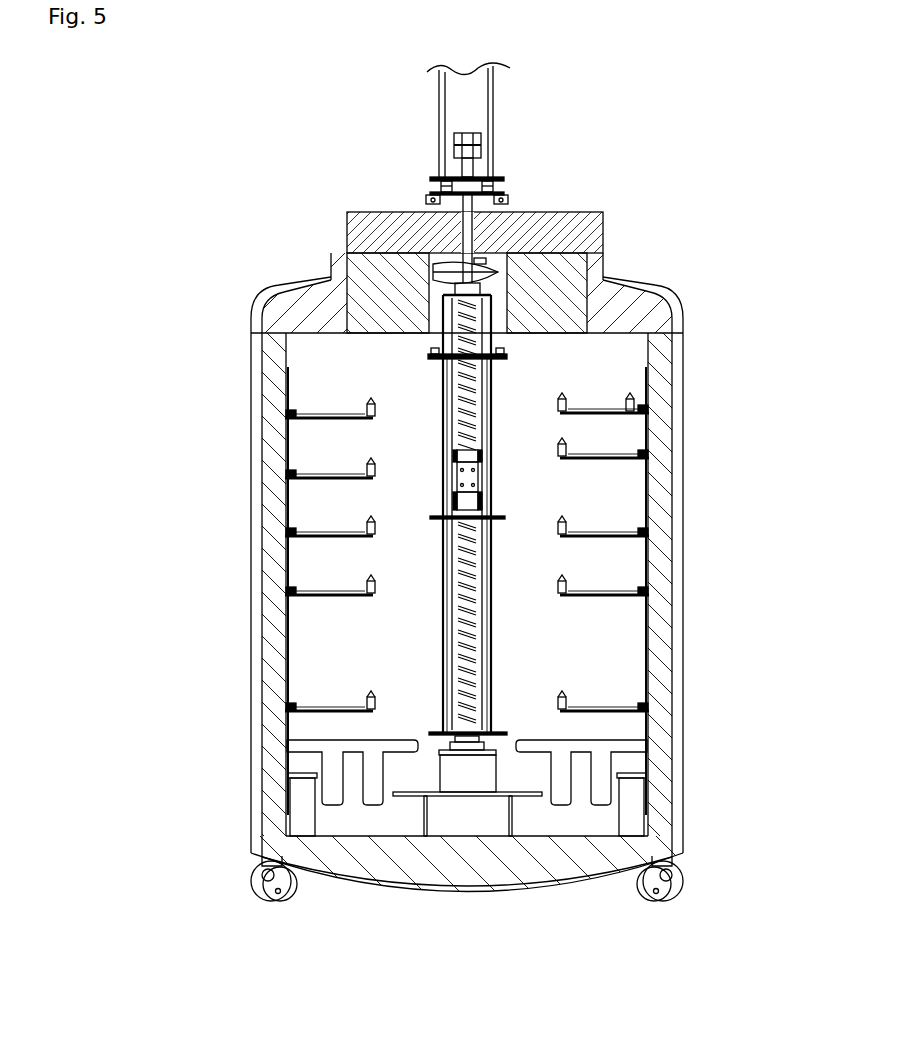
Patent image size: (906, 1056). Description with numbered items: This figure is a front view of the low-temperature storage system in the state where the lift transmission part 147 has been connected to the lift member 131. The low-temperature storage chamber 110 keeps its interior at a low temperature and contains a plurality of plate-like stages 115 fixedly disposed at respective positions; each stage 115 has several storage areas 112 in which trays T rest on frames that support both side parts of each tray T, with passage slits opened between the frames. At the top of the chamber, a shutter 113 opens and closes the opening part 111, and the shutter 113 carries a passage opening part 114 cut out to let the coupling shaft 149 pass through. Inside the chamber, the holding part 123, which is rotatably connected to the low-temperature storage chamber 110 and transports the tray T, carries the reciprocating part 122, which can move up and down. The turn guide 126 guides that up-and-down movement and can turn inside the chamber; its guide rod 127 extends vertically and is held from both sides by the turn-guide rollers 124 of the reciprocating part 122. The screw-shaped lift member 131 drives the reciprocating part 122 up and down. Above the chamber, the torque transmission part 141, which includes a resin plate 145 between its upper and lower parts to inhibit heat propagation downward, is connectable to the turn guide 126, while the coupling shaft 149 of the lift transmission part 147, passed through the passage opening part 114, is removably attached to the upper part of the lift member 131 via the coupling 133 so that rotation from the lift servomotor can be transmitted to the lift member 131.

The low-temperature storage chamber 110 is at (285, 313).
The opening part 111 is at (497, 278).
The storage area 112 is at (470, 475).
The shutter 113 is at (375, 235).
The passage opening part 114 is at (472, 232).
The stage 115 is at (640, 456).
The reciprocating part 122 is at (480, 479).
The holding part 123 is at (505, 518).
The turn-guide roller 124 is at (450, 455).
The turn guide 126 is at (443, 380).
The guide rod 127 is at (457, 547).
The lift member 131 is at (478, 397).
The coupling 133 is at (433, 268).
The torque transmission part 141 is at (439, 93).
The resin plate 145 is at (472, 103).
The lift transmission part 147 is at (506, 197).
The coupling shaft 149 is at (570, 173).
The tray T is at (602, 457).